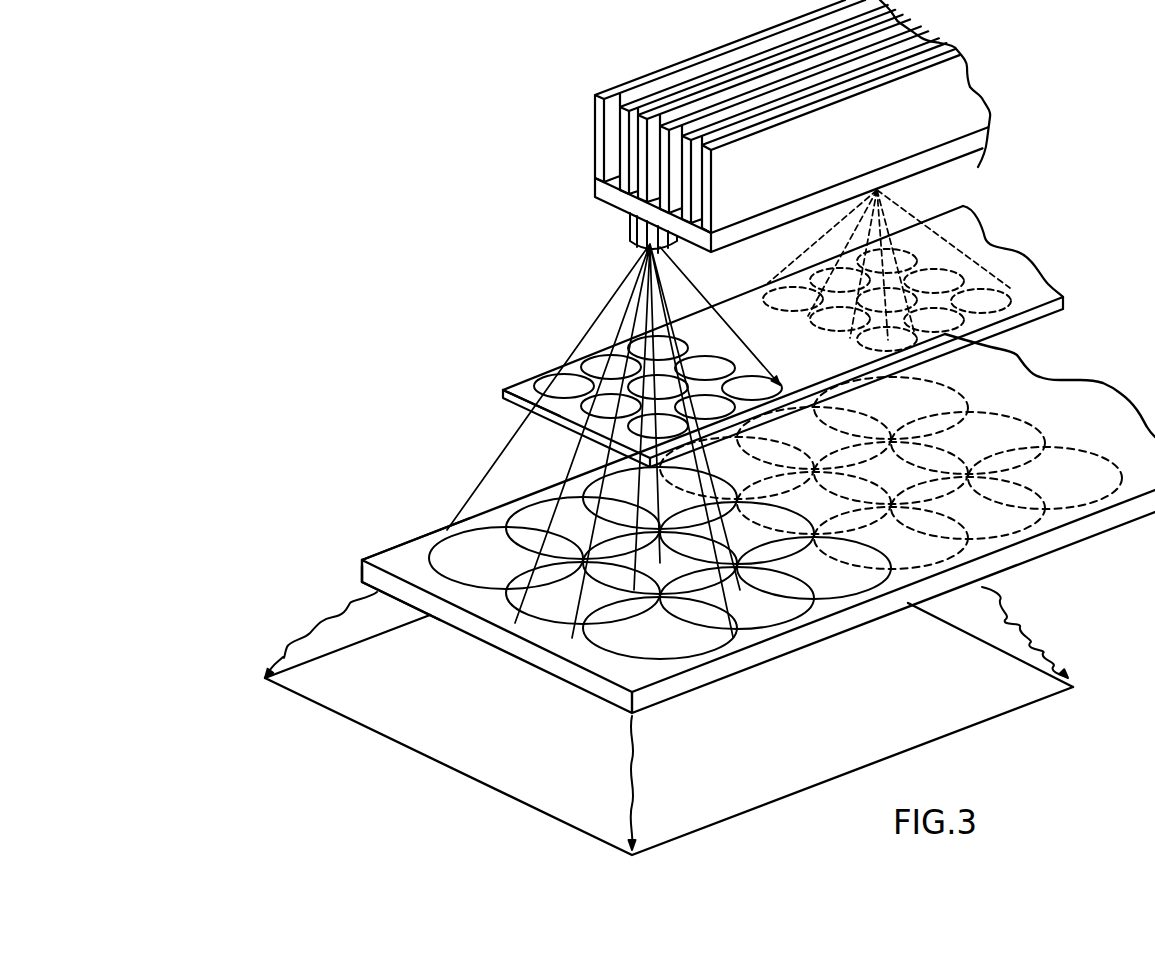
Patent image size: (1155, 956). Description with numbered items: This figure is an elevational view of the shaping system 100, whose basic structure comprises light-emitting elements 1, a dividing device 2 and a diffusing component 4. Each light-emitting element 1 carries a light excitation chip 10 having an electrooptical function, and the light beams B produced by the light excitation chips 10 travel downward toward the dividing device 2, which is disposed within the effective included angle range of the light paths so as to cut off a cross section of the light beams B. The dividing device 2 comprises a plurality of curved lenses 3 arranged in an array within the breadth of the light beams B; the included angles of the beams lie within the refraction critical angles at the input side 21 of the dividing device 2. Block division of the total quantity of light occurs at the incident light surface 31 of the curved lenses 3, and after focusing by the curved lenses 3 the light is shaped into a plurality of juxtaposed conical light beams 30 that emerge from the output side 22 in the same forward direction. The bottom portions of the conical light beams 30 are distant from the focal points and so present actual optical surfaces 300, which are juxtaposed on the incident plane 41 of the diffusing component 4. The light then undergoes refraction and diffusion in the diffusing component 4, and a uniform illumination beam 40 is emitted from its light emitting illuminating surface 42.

The shaping system 100 is at (604, 319).
The light excitation chip 10 is at (628, 251).
The light-emitting element 1 is at (630, 235).
The light beam B is at (720, 316).
The dividing device 2 is at (727, 328).
The input side 21 is at (490, 322).
The output side 22 is at (508, 420).
The curved lens 3 is at (563, 383).
The incident light surface 31 is at (530, 383).
The conical light beam 30 is at (718, 528).
The actual optical surface 300 is at (578, 628).
The diffusing component 4 is at (372, 578).
The incident plane 41 is at (397, 558).
The light emitting illuminating surface 42 is at (389, 605).
The uniform illumination beam 40 is at (636, 718).